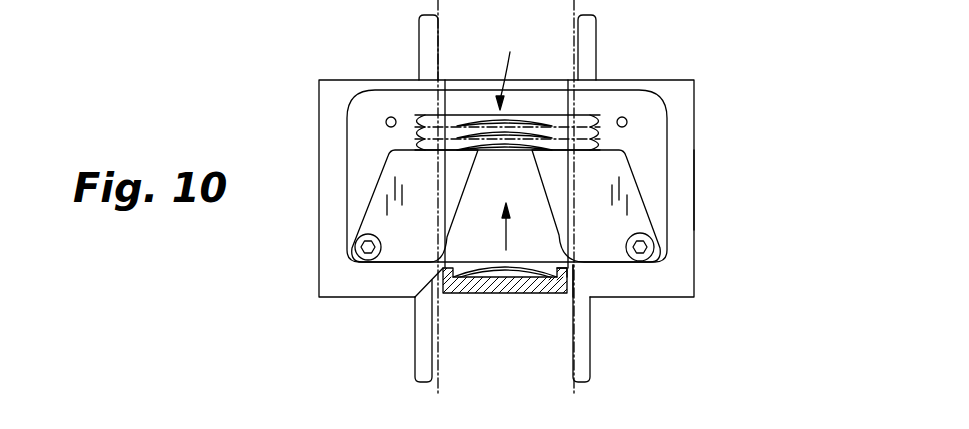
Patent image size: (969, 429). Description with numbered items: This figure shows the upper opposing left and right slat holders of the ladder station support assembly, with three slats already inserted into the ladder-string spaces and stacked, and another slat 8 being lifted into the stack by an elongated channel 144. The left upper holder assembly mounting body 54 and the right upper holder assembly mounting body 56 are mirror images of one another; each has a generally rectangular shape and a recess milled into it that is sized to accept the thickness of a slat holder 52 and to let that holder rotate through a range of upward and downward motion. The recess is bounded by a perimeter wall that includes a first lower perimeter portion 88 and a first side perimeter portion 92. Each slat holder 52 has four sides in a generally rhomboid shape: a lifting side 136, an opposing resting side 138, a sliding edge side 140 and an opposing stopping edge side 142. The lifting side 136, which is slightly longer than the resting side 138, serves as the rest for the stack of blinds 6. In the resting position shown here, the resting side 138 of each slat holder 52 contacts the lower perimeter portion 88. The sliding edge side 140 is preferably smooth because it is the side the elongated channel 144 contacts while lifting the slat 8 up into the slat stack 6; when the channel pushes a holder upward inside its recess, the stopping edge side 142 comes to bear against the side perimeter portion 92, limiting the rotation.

The slat stack 6 is at (513, 68).
The slat 8 is at (502, 268).
The slat holder 52 is at (627, 170).
The left upper holder assembly mounting body 54 is at (327, 208).
The right upper holder assembly mounting body 56 is at (694, 187).
The first lower perimeter portion 88 is at (583, 265).
The first side perimeter portion 92 is at (667, 112).
The lifting side 136 is at (622, 143).
The resting side 138 is at (600, 282).
The sliding edge side 140 is at (570, 265).
The stopping edge side 142 is at (653, 212).
The elongated channel 144 is at (545, 293).